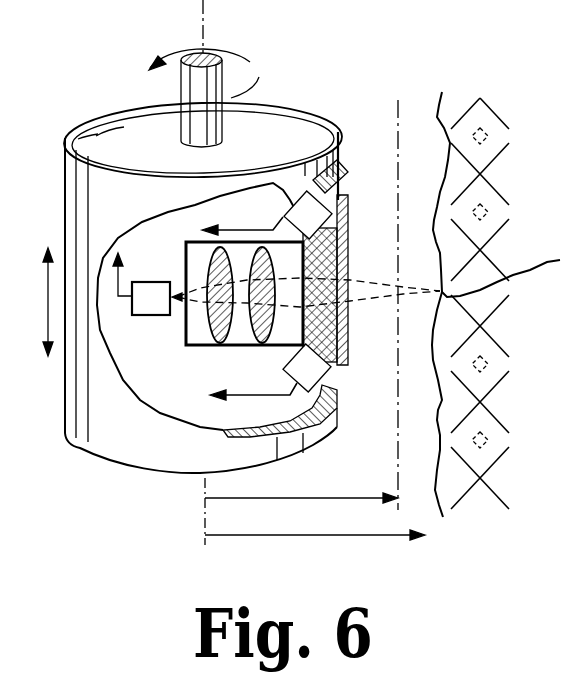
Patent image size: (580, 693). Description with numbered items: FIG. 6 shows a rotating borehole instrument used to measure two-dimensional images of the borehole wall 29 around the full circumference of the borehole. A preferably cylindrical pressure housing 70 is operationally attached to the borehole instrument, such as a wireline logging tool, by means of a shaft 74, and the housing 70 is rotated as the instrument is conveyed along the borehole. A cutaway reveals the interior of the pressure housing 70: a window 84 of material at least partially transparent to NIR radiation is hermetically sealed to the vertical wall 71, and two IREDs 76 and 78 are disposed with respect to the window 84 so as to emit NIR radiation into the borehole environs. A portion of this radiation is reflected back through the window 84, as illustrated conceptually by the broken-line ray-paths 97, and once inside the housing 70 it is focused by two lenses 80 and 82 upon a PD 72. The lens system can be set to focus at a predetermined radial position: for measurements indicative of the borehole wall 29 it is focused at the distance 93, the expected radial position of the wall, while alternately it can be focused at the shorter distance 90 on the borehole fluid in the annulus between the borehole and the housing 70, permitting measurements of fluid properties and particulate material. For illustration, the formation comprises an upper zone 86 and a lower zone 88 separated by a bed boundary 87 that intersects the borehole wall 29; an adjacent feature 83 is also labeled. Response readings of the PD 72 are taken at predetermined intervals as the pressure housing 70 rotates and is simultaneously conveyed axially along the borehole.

The pressure housing 70 is at (345, 112).
The vertical wall 71 is at (343, 178).
The PD 72 is at (157, 316).
The shaft 74 is at (245, 60).
The IRED 76 is at (290, 205).
The IRED 78 is at (292, 352).
The lens 80 is at (236, 316).
The lens 82 is at (188, 316).
The window 84 is at (352, 262).
The upper zone 86 is at (532, 170).
The bed boundary 87 is at (556, 262).
The lower zone 88 is at (534, 396).
The sample 83 is at (579, 86).
The borehole wall 29 is at (435, 213).
The distance d1 90 is at (317, 497).
The distance d2 93 is at (230, 538).
The ray-paths 97 is at (372, 307).